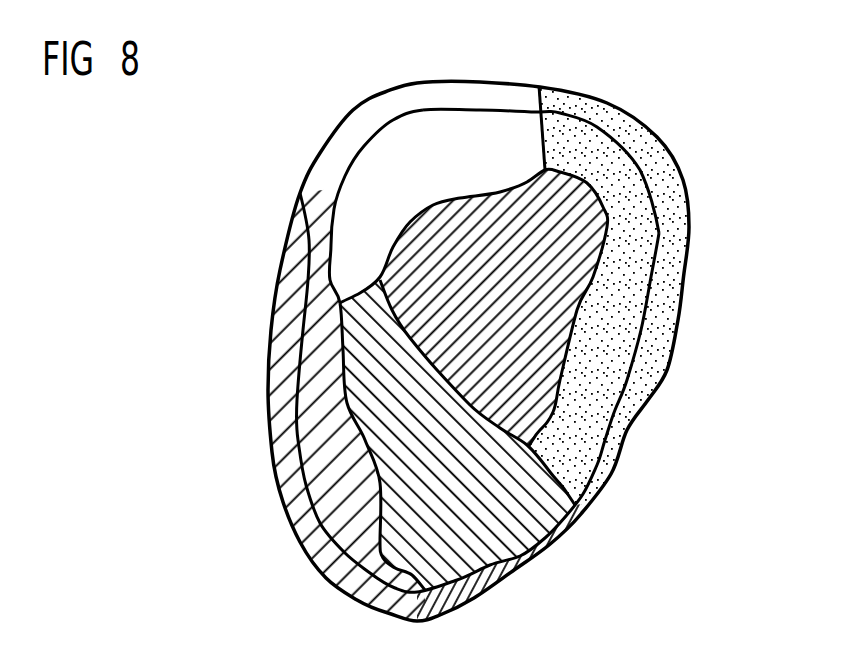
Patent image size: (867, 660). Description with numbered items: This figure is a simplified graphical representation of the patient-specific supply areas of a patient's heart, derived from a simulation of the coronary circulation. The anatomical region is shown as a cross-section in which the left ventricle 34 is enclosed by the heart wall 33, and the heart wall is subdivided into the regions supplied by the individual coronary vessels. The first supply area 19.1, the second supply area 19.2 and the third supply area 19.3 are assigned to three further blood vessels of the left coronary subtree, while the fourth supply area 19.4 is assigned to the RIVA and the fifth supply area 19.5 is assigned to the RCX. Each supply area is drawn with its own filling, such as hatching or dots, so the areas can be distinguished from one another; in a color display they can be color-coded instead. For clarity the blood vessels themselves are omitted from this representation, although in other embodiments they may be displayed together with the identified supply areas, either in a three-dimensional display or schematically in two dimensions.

The heart wall 33 is at (473, 93).
The left ventricle 34 is at (567, 523).
The first supply area 19.1 is at (522, 572).
The second supply area 19.2 is at (523, 410).
The third supply area 19.3 is at (390, 160).
The fourth supply area 19.4 is at (313, 391).
The fifth supply area 19.5 is at (595, 360).